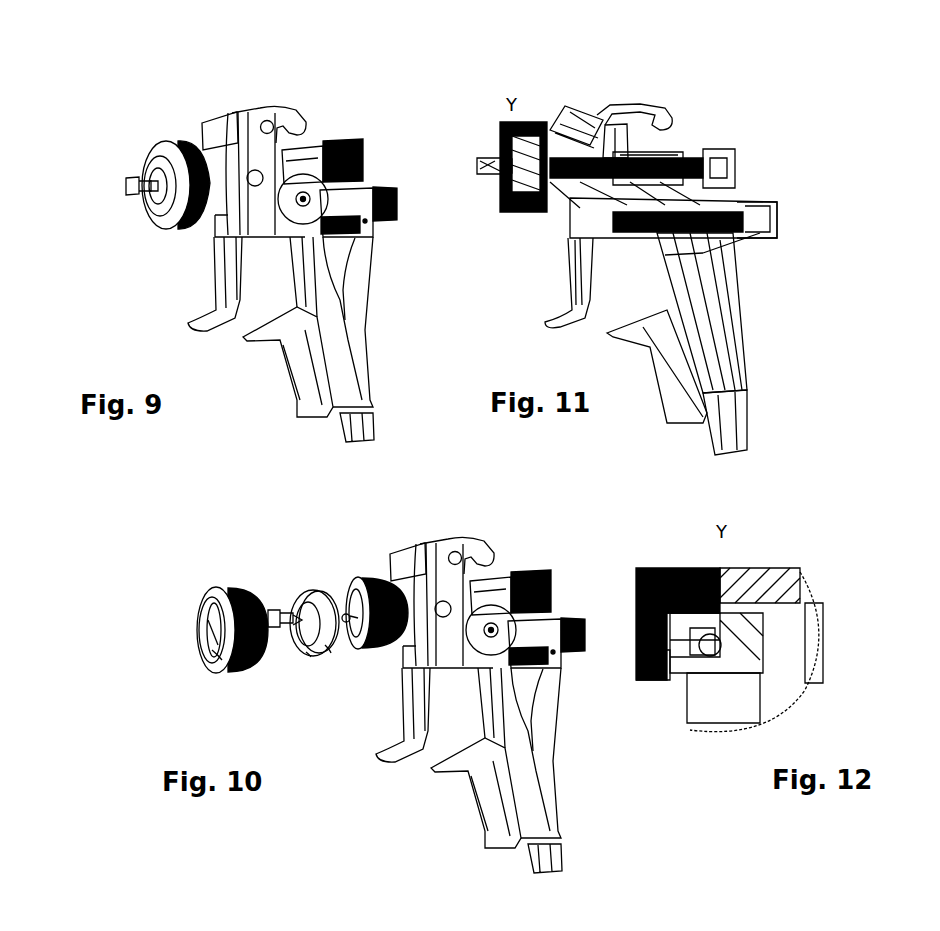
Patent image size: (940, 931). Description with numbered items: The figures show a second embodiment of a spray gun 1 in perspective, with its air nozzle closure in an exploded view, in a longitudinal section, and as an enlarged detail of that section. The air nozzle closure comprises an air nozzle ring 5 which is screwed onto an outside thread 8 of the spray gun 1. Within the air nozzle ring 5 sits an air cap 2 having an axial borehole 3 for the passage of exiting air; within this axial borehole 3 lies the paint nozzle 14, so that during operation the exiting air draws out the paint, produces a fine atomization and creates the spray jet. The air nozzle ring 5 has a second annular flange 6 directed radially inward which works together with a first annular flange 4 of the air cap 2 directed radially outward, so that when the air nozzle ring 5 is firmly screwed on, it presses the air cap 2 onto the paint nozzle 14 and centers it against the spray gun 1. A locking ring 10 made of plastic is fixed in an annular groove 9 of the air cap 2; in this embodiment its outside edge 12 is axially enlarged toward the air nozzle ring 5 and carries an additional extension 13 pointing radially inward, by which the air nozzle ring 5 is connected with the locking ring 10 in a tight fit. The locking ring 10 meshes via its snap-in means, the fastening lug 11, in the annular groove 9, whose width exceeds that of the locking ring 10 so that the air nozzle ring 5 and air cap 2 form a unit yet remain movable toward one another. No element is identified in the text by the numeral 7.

In FIG. 9, the spray gun 1 is at (370, 110).
In FIG. 11, the spray gun 1 is at (738, 112).
In FIG. 10, the spray gun 1 is at (568, 562).
In FIG. 9, the air cap 2 is at (152, 222).
In FIG. 11, the air cap 2 is at (502, 140).
In FIG. 10, the air cap 2 is at (310, 590).
In FIG. 12, the air cap 2 is at (680, 710).
In FIG. 9, the axial borehole 3 is at (128, 185).
In FIG. 11, the axial borehole 3 is at (500, 165).
In FIG. 10, the axial borehole 3 is at (289, 656).
In FIG. 10, the first annular flange 4 is at (329, 650).
In FIG. 12, the first annular flange 4 is at (703, 650).
In FIG. 9, the air nozzle ring 5 is at (172, 140).
In FIG. 11, the air nozzle ring 5 is at (530, 120).
In FIG. 10, the air nozzle ring 5 is at (228, 588).
In FIG. 12, the air nozzle ring 5 is at (777, 583).
In FIG. 12, the second annular flange 6 is at (722, 652).
In FIG. 10, the air cap 7 is at (222, 655).
In FIG. 10, the outside thread 8 is at (374, 577).
In FIG. 10, the annular groove 9 is at (309, 656).
In FIG. 12, the annular groove 9 is at (640, 658).
In FIG. 10, the locking ring 10 is at (193, 620).
In FIG. 12, the locking ring 10 is at (656, 572).
In FIG. 10, the fastening lug 11 is at (208, 632).
In FIG. 10, the outside edge 12 is at (210, 592).
In FIG. 12, the outside edge 12 is at (680, 567).
In FIG. 12, the extension 13 is at (713, 617).
In FIG. 10, the paint nozzle 14 is at (343, 628).